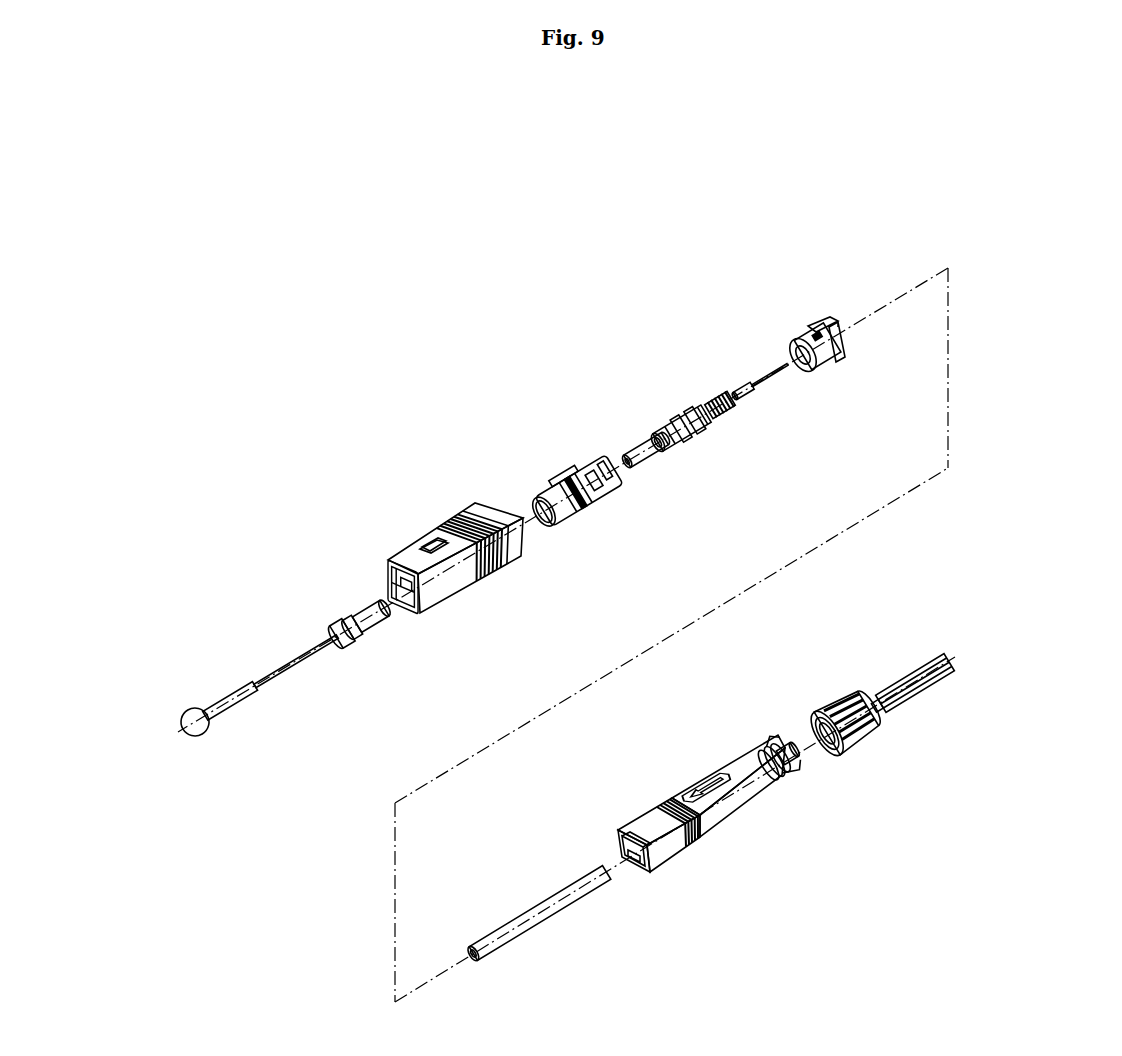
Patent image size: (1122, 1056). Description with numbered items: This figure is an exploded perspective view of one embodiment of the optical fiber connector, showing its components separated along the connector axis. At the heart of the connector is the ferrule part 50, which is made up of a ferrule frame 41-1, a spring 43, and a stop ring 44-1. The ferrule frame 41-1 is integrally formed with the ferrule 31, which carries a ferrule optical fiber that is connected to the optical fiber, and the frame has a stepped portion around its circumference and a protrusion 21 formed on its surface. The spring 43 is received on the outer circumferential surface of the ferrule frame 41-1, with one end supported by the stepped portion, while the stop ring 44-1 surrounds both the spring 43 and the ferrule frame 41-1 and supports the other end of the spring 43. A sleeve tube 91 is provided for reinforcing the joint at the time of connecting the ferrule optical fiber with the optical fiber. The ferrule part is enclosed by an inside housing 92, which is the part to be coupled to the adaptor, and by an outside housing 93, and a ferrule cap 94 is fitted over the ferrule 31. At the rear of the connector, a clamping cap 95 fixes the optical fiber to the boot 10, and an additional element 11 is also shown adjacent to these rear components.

The ferrule part 50 is at (443, 318).
The stop ring 44-1 is at (814, 320).
The protrusion 21 is at (722, 390).
The spring 43 is at (692, 402).
The ferrule frame 41-1 is at (677, 413).
The ferrule 31 is at (627, 452).
The inside housing 92 is at (533, 492).
The outside housing 93 is at (395, 557).
The ferrule cap 94 is at (228, 702).
The sleeve tube 91 is at (554, 908).
The connector front plug 11 is at (660, 872).
The boot 10 is at (716, 836).
The clamping cap 95 is at (860, 748).